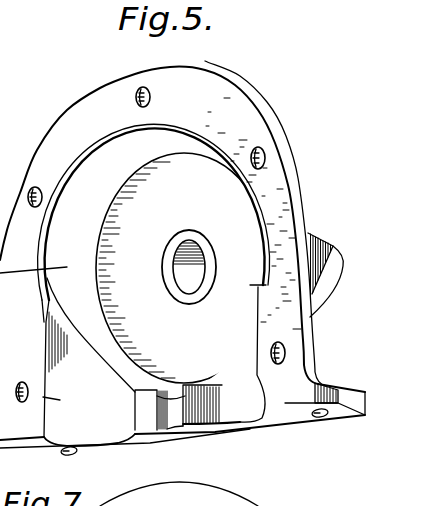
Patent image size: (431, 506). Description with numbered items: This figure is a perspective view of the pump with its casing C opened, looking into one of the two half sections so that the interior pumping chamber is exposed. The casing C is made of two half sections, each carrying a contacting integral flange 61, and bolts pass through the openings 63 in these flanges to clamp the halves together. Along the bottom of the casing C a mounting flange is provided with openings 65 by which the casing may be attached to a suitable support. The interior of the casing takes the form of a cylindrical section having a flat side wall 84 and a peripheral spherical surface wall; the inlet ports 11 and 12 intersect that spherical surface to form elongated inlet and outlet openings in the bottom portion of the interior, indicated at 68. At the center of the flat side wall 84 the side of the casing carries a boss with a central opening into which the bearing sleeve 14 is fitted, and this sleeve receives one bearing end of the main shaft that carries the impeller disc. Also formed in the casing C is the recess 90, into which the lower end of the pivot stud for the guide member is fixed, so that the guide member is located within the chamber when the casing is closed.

In FIG. 5, the casing C is at (294, 134).
In FIG. 5, the contacting integral flange 61 is at (236, 103).
In FIG. 5, the opening 63 is at (148, 92).
In FIG. 5, the elongated inlet and outlet opening 68 is at (250, 367).
In FIG. 5, the flat side wall 84 is at (190, 188).
In FIG. 7, the flat side wall 84 is at (256, 505).
In FIG. 5, the bearing sleeve 14 is at (190, 297).
In FIG. 5, the inlet port 12 is at (107, 425).
In FIG. 5, the inlet port 11 is at (240, 417).
In FIG. 5, the recess 90 is at (172, 418).
In FIG. 5, the opening 65 is at (68, 450).